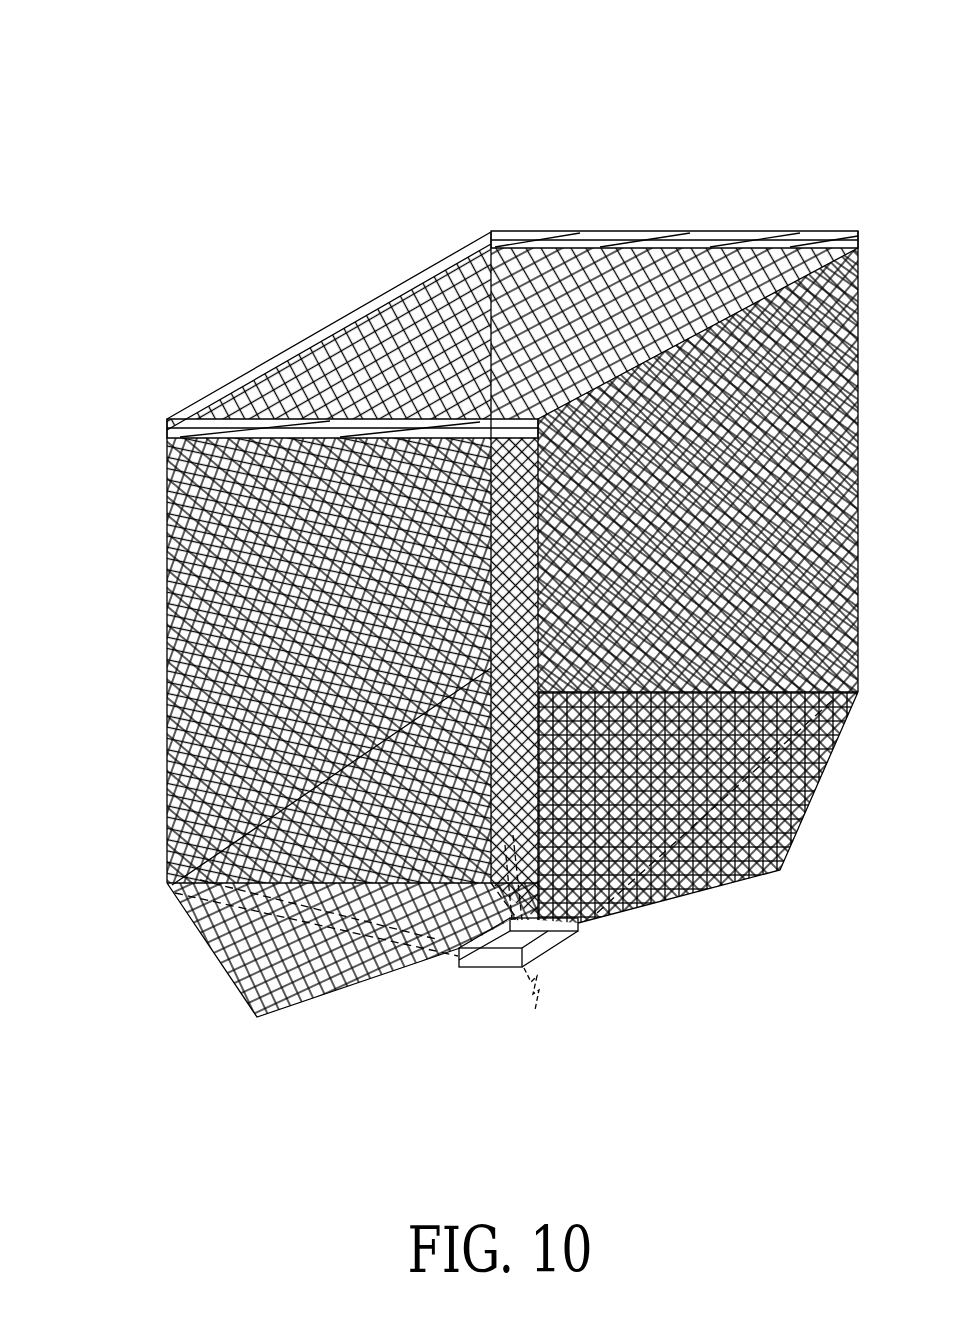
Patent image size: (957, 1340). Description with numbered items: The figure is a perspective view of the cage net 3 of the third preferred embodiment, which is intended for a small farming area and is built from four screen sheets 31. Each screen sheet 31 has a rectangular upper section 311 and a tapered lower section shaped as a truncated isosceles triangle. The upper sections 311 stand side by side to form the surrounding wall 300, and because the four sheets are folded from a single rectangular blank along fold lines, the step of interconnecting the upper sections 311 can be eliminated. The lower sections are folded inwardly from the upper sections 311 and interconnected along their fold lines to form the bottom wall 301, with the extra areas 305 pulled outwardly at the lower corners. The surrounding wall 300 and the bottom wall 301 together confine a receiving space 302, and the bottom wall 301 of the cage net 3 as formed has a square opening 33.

The cage net 3 is at (448, 582).
The screen sheet 31 is at (300, 322).
The upper section 311 is at (278, 392).
The receiving space 302 is at (436, 320).
The surrounding wall 300 is at (170, 612).
The bottom wall 301 is at (393, 972).
The extra area 305 is at (262, 995).
The opening 33 is at (553, 945).